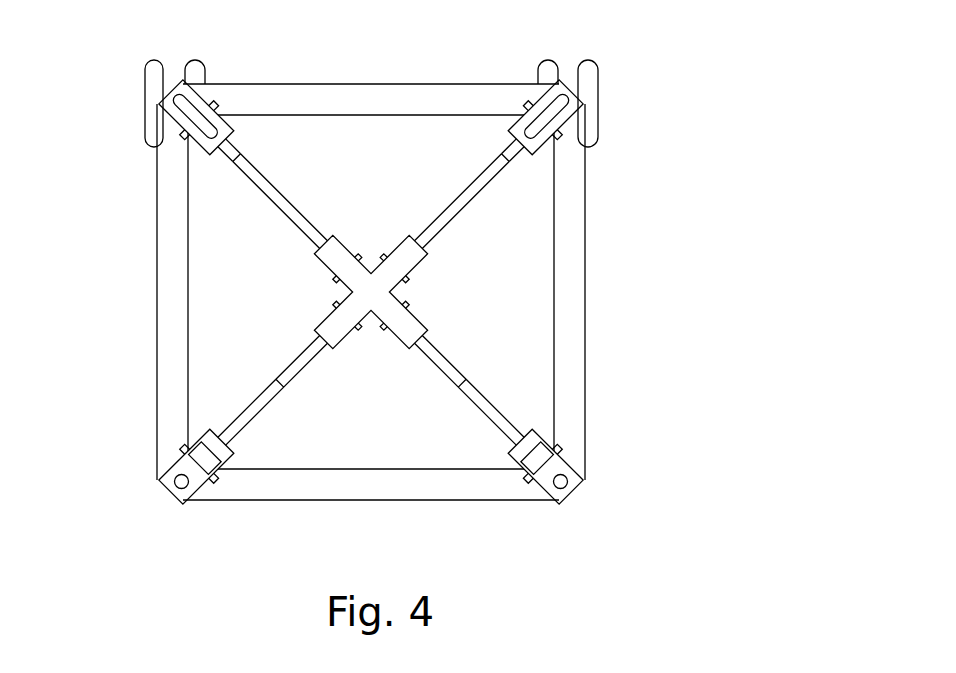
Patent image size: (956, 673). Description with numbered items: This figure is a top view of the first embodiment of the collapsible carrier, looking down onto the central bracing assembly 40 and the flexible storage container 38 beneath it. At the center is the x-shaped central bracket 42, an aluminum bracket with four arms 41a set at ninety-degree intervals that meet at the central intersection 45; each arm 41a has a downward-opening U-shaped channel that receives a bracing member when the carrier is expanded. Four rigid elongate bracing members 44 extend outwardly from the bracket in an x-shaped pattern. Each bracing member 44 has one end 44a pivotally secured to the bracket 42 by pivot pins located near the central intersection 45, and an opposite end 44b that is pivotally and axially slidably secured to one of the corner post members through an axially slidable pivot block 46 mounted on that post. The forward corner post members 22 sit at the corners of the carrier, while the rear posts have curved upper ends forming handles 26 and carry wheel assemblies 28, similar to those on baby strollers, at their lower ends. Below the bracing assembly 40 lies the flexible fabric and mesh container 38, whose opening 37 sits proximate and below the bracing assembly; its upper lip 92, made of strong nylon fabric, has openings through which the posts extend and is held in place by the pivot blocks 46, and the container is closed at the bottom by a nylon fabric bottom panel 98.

The forward corner post member 22 is at (163, 497).
The handle 26 is at (217, 125).
The wheel assembly 28 is at (148, 83).
The opening 37 is at (197, 225).
The flexible storage container 38 is at (178, 356).
The central bracing assembly 40 is at (340, 360).
The arm 41a is at (333, 320).
The central bracket 42 is at (333, 238).
The bracing member 44 is at (255, 187).
The end of bracing member 44a is at (428, 232).
The opposite end of bracing member 44b is at (227, 440).
The central intersection 45 is at (371, 282).
The pivot block 46 is at (155, 105).
The upper lip 92 is at (367, 95).
The bottom panel 98 is at (308, 130).